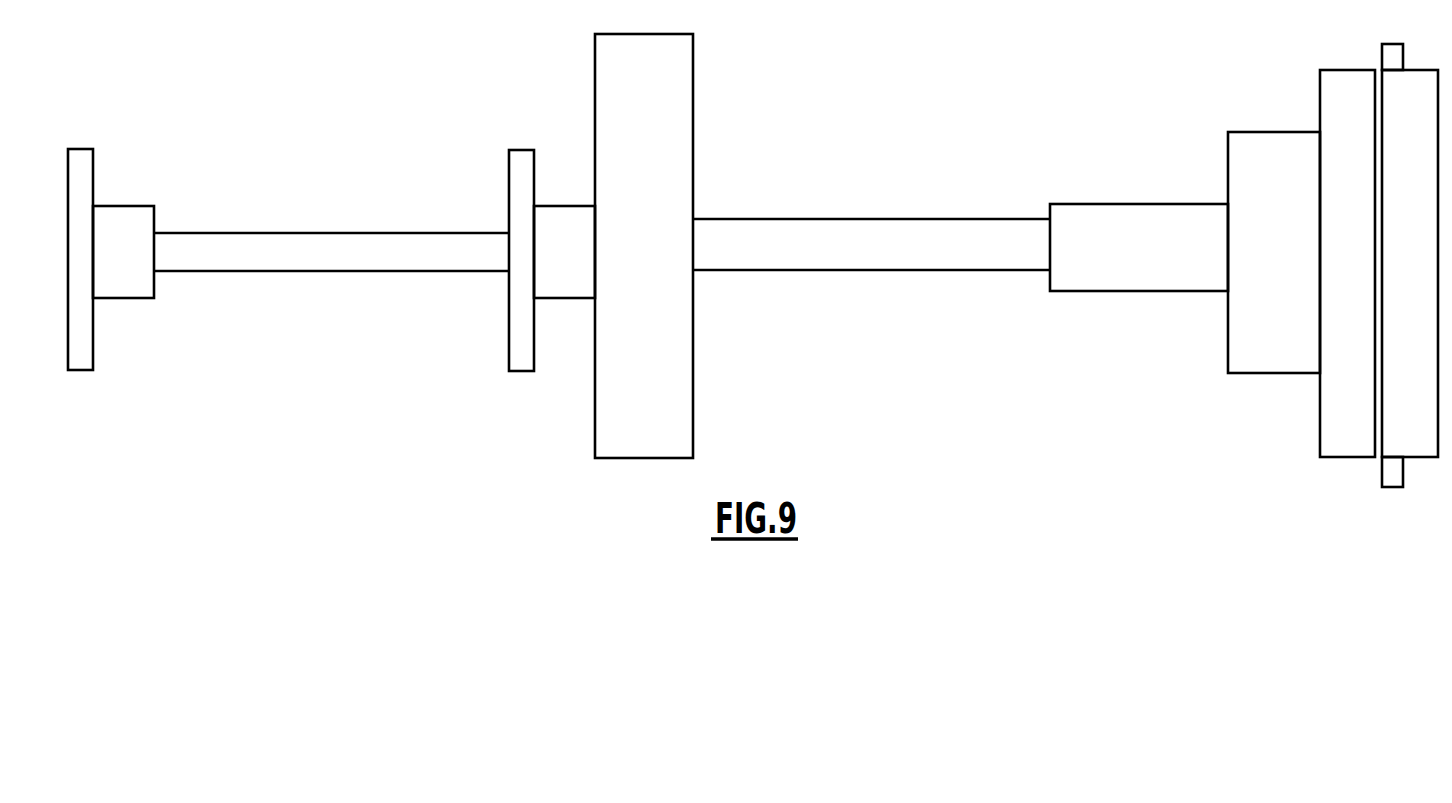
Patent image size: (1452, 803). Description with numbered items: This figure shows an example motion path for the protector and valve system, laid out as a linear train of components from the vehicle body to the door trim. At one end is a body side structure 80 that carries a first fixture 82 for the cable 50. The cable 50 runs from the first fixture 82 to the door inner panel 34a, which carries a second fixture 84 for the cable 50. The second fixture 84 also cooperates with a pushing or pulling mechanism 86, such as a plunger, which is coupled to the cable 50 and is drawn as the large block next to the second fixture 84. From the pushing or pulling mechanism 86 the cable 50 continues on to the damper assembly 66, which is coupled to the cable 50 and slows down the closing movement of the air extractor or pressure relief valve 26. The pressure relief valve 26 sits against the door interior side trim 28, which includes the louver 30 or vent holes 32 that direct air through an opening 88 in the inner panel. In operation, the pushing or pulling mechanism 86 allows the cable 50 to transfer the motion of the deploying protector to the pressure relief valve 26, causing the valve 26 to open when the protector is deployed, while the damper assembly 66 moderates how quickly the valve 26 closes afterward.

The pressure relief valve 26 is at (1247, 132).
The door interior side trim 28 is at (1382, 52).
The louver 30 is at (1390, 302).
The vent holes 32 is at (1418, 450).
The door inner panel 34a is at (523, 371).
The cable 50 is at (338, 233).
The damper assembly 66 is at (1134, 204).
The body side structure 80 is at (81, 370).
The first fixture 82 is at (131, 206).
The second fixture 84 is at (577, 214).
The pushing or pulling mechanism 86 is at (678, 151).
The opening 88 is at (1338, 457).